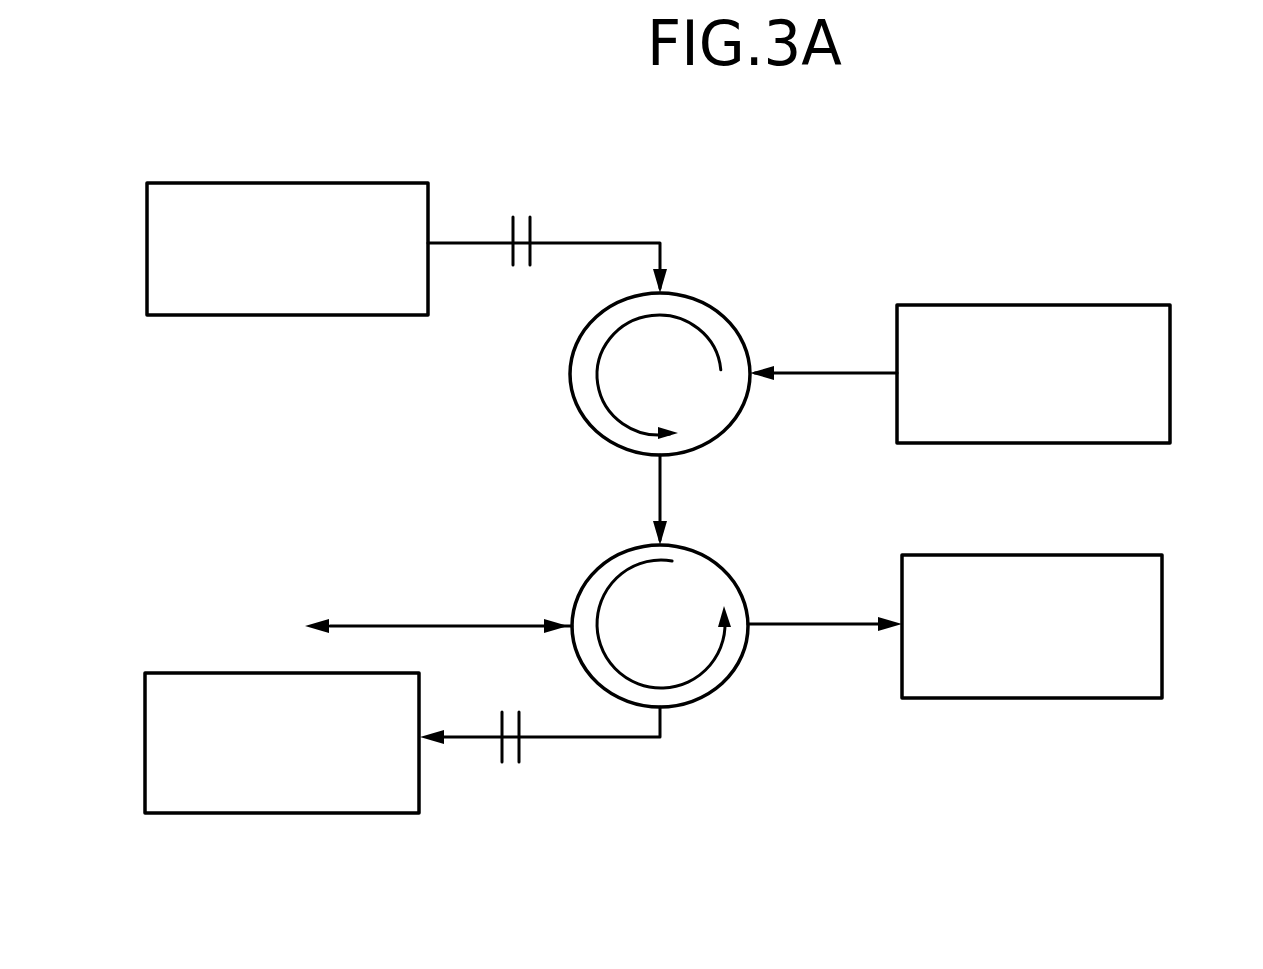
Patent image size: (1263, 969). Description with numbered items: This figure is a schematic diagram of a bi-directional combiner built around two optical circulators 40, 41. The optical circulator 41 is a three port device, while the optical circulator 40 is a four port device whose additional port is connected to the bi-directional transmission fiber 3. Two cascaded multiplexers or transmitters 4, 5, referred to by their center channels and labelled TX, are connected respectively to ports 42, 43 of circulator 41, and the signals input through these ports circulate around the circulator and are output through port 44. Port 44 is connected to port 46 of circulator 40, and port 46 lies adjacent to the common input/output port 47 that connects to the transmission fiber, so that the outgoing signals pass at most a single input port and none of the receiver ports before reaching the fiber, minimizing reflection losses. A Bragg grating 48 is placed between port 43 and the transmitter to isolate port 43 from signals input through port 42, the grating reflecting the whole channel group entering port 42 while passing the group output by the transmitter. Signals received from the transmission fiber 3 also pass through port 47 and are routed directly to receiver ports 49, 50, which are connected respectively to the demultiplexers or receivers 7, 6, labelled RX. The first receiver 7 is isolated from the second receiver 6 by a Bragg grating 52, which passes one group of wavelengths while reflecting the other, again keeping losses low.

The bi-directional transmission fiber 3 is at (433, 626).
The cascaded multiplexer or transmitter 4 is at (352, 308).
The cascaded multiplexer or transmitter 5 is at (1157, 330).
The demultiplexer or receiver 6 is at (1145, 598).
The demultiplexer or receiver 7 is at (355, 803).
The optical circulator 40 is at (724, 583).
The optical circulator 41 is at (717, 310).
The port 42 is at (792, 376).
The port 43 is at (659, 377).
The port 44 is at (659, 471).
The port 46 is at (664, 624).
The common input/output port 47 is at (600, 623).
The Bragg grating 48 is at (532, 228).
The receiver port 49 is at (548, 698).
The receiver port 50 is at (793, 623).
The Bragg grating 52 is at (522, 748).